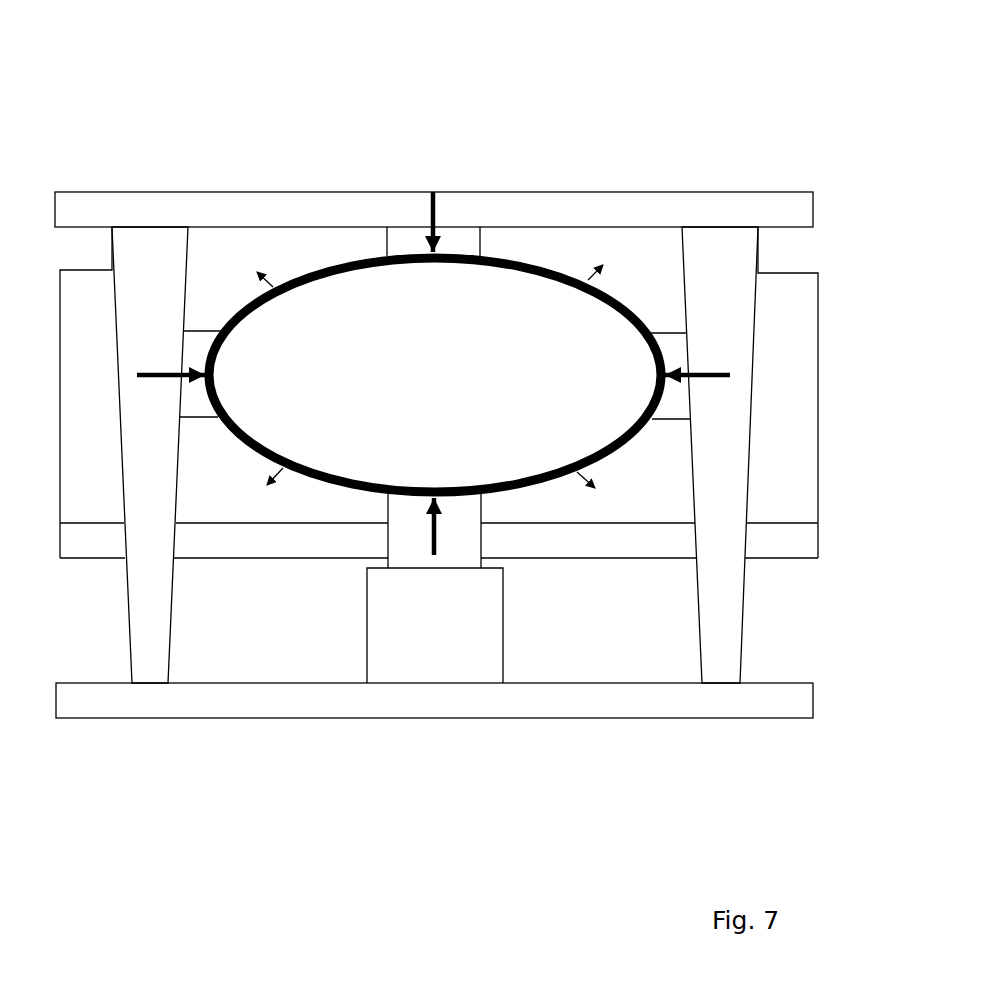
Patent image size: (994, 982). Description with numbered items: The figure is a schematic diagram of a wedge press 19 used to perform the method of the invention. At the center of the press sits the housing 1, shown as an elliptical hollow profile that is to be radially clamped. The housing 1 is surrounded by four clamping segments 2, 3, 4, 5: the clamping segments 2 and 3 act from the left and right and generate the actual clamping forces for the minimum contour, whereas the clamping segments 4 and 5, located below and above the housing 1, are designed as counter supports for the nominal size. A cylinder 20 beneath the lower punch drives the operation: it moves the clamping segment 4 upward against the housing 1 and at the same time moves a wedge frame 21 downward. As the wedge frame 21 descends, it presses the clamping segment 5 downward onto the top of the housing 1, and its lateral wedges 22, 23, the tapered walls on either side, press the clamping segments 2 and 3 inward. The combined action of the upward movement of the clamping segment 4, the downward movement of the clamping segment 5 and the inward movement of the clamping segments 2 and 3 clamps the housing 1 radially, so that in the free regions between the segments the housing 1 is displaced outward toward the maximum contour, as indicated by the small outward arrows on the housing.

The wedge press 19 is at (255, 155).
The housing 1 is at (540, 265).
The clamping segment 2 is at (198, 405).
The clamping segment 3 is at (670, 342).
The clamping segment 4 is at (405, 533).
The clamping segment 5 is at (407, 233).
The cylinder 20 is at (470, 652).
The wedge frame 21 is at (220, 700).
The lateral wedge 22 is at (153, 272).
The lateral wedge 23 is at (720, 590).